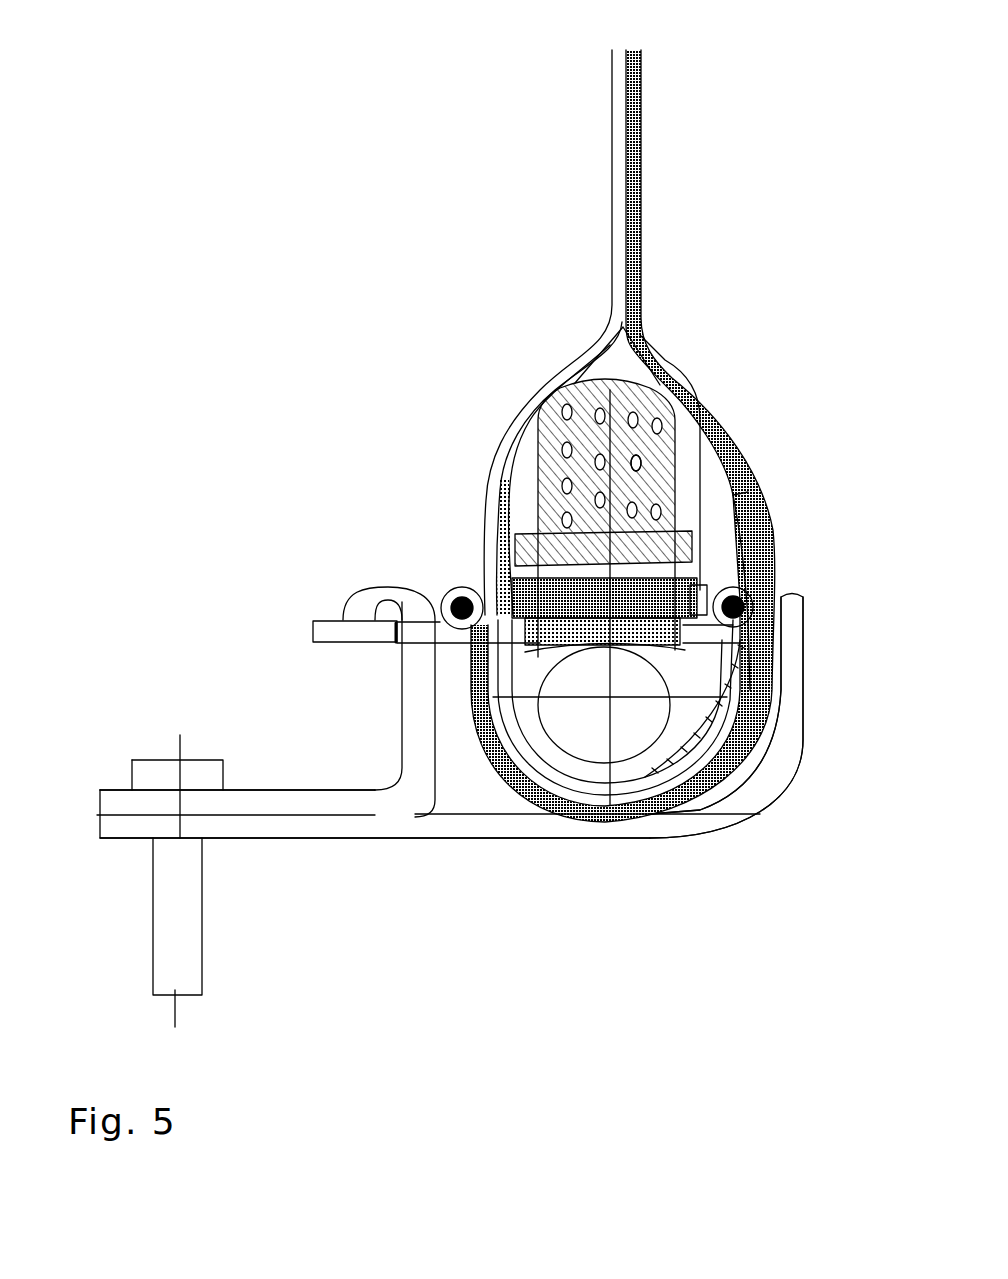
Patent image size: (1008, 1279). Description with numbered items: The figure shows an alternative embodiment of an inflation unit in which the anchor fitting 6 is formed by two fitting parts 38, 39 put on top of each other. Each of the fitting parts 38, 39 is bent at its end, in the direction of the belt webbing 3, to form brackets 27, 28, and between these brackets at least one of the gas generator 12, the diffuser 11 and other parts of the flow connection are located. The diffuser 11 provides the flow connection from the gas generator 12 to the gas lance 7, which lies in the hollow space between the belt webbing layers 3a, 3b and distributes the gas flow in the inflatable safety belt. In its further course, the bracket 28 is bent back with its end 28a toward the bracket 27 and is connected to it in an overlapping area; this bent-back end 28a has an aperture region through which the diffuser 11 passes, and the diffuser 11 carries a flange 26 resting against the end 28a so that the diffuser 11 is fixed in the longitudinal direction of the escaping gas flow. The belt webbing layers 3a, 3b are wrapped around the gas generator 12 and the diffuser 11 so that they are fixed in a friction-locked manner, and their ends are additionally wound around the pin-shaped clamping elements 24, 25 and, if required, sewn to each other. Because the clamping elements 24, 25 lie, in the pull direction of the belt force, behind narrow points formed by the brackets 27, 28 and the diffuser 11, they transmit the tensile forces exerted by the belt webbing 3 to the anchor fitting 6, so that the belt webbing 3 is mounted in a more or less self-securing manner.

The belt webbing 3 is at (630, 90).
The belt webbing layer 3a is at (513, 427).
The belt webbing layer 3b is at (730, 435).
The anchor fitting 6 is at (378, 870).
The gas lance 7 is at (603, 363).
The diffuser 11 is at (663, 455).
The gas generator 12 is at (636, 740).
The clamping element 24 is at (455, 598).
The clamping element 25 is at (745, 598).
The flange 26 is at (513, 580).
The bracket 27 is at (415, 688).
The bracket 28 is at (788, 692).
The end 28a is at (337, 630).
The fitting part 38 is at (330, 838).
The fitting part 39 is at (500, 838).